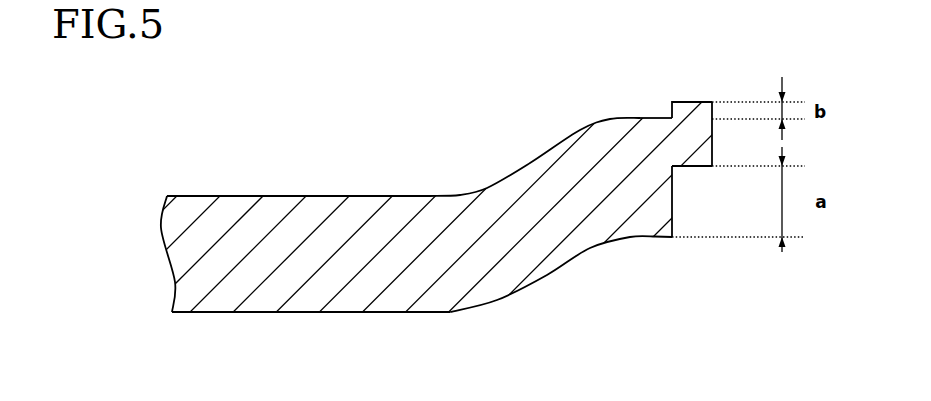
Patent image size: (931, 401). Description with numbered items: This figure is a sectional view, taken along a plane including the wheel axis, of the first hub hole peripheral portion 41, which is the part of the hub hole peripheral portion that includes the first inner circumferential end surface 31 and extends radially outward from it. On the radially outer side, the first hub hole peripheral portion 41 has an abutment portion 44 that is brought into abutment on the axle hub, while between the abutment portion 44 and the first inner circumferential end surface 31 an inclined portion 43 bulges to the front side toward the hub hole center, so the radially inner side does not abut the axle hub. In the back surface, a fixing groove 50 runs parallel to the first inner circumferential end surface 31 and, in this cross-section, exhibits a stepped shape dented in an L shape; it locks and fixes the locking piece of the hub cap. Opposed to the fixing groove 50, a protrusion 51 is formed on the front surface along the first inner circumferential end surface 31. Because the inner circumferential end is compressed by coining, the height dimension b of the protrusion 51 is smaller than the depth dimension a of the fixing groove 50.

The first inner circumferential end surface 31 is at (713, 137).
The first hub hole peripheral portion 41 is at (605, 120).
The inclined portion 43 is at (547, 275).
The abutment portion 44 is at (353, 313).
The fixing groove 50 is at (673, 203).
The protrusion 51 is at (675, 100).